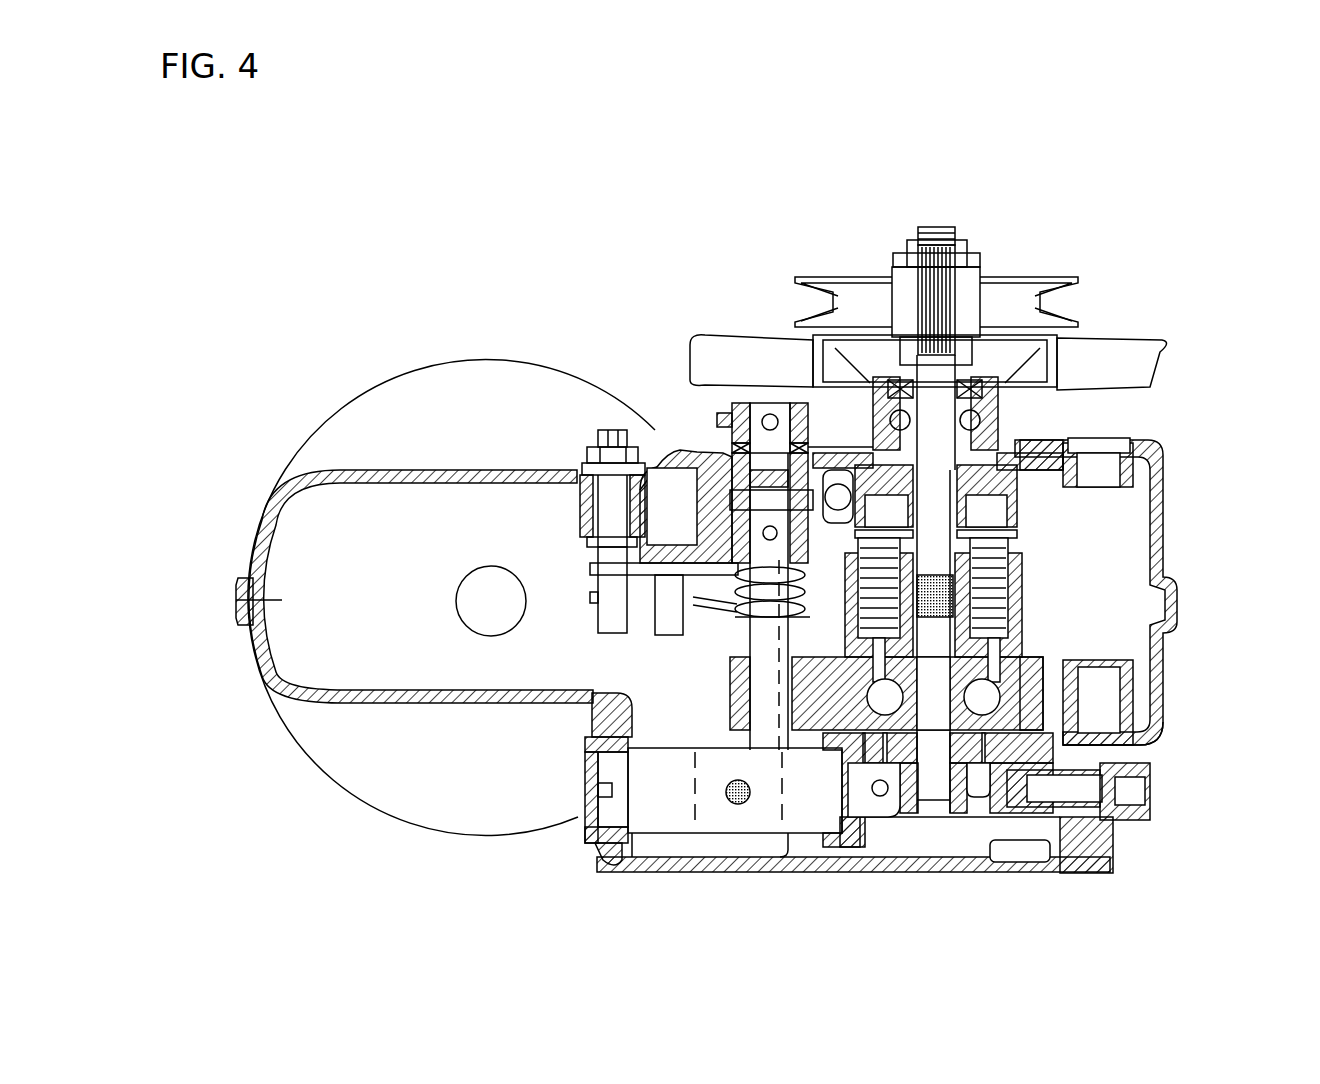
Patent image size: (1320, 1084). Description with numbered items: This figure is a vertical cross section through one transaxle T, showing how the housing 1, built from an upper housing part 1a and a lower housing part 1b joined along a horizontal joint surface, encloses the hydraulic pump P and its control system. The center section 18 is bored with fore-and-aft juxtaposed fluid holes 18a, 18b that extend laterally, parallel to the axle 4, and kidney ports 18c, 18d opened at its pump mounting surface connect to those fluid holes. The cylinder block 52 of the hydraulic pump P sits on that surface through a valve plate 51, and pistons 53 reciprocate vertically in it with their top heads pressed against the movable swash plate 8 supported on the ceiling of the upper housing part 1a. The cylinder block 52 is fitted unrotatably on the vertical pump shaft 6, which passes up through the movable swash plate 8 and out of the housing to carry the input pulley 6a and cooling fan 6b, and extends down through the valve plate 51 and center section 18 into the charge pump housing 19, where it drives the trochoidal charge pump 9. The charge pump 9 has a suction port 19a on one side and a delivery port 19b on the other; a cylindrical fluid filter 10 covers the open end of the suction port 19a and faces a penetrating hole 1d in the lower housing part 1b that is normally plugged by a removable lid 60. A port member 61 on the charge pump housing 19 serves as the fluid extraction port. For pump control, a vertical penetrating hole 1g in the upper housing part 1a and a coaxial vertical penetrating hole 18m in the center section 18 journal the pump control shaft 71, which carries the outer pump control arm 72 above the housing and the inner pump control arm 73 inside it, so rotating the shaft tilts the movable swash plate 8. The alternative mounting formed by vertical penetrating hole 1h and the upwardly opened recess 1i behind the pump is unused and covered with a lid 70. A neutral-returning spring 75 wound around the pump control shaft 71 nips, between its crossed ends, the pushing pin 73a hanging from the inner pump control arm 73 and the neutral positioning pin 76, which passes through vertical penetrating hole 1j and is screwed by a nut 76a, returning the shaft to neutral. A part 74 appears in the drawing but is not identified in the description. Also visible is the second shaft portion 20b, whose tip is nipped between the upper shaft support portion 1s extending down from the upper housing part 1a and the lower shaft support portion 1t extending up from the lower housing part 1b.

The transaxle T is at (487, 296).
The housing 1 is at (296, 428).
The upper housing part 1a is at (253, 557).
The lower housing part 1b is at (242, 612).
The penetrating hole 1d is at (598, 862).
The vertical penetrating hole 1g is at (663, 455).
The vertical penetrating hole 1h is at (1105, 457).
The upwardly opened recess 1i is at (1110, 697).
The vertical penetrating hole 1j is at (583, 505).
The upper shaft support portion 1s is at (640, 440).
The lower shaft support portion 1t is at (740, 848).
The axle 4 is at (470, 606).
The pump shaft 6 is at (935, 228).
The input pulley 6a is at (1042, 278).
The cooling fan 6b is at (1112, 337).
The movable swash plate 8 is at (1010, 490).
The charge pump 9 is at (1150, 767).
The fluid filter 10 is at (663, 833).
The center section 18 is at (1043, 652).
The fluid hole 18a is at (1063, 680).
The fluid hole 18b is at (845, 750).
The kidney port 18c is at (1060, 613).
The kidney port 18d is at (868, 677).
The vertical penetrating hole 18m is at (595, 712).
The charge pump housing 19 is at (1010, 822).
The suction port 19a is at (893, 745).
The delivery port 19b is at (995, 762).
The second shaft portion 20b is at (700, 640).
The valve plate 51 is at (1032, 650).
The cylinder block 52 is at (1020, 580).
The pistons 53 is at (1015, 532).
The lid 60 is at (585, 787).
The port member 61 is at (1125, 820).
The lid 70 is at (1095, 440).
The pump control shaft 71 is at (795, 432).
The outer pump control arm 72 is at (722, 413).
The inner pump control arm 73 is at (670, 548).
The pushing pin 73a is at (660, 628).
The lever 74 is at (835, 512).
The neutral-returning spring 75 is at (600, 595).
The neutral positioning pin 76 is at (605, 617).
The nut 76a is at (590, 455).
The hydraulic pump P is at (1062, 563).